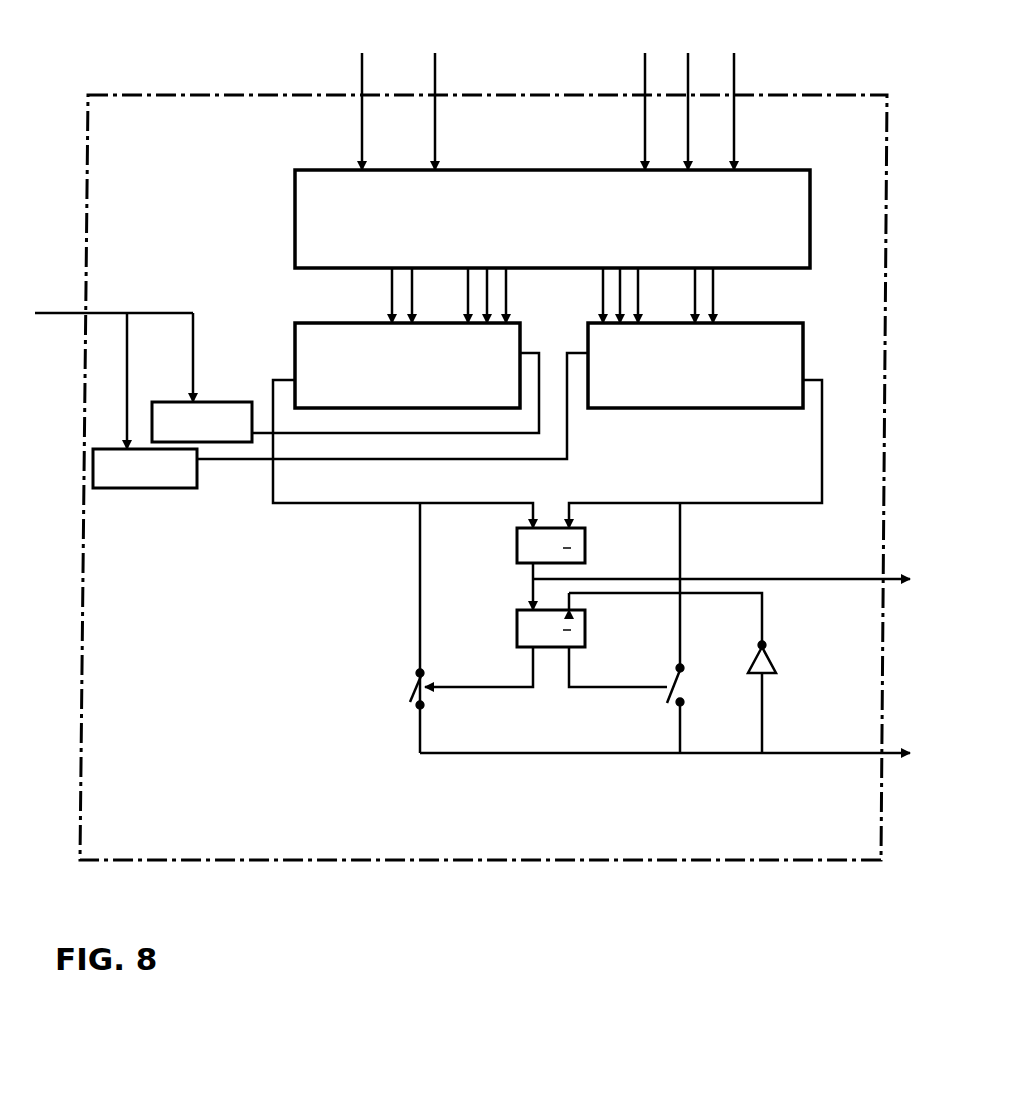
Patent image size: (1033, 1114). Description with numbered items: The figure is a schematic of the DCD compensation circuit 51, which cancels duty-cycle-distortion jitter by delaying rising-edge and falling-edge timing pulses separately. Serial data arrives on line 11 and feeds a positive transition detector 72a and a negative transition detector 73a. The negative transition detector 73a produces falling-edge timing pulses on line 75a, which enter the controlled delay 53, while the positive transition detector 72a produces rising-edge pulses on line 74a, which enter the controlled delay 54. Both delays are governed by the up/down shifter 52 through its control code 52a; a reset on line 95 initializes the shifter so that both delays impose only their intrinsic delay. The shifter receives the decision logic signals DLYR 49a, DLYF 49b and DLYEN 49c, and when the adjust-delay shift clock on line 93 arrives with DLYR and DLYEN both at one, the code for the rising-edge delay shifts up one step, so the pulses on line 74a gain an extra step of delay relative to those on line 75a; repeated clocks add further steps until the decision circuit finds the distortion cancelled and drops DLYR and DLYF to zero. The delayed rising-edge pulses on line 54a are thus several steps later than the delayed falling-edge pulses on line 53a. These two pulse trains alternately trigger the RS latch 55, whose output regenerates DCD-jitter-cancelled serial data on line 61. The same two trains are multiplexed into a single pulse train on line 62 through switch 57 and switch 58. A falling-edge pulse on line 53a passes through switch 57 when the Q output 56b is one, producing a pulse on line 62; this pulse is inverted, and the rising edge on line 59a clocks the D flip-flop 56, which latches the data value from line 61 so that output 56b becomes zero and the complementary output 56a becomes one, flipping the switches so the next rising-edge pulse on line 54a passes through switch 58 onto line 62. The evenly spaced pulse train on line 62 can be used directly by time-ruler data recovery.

The DCD compensation circuit 51 is at (418, 860).
The up/down shifter 52 is at (810, 192).
The shifter output control code 52a is at (713, 310).
The controlled delay 53 is at (520, 342).
The controlled delay 54 is at (803, 342).
The falling edge pulse line 53a is at (348, 503).
The rising edge pulse line 54a is at (628, 503).
The SHIFCK line 93 is at (362, 78).
The reset line 95 is at (435, 78).
The DLYR line 49a is at (645, 74).
The DLYF line 49b is at (688, 74).
The DLYEN line 49c is at (734, 74).
The serial data in line 11 is at (74, 316).
The negative transition detector 73a is at (178, 402).
The negative transition detector output line 75a is at (273, 433).
The positive transition detector 72a is at (160, 488).
The positive transition detector output line 74a is at (262, 460).
The RS latch 55 is at (517, 540).
The D flip-flop 56 is at (517, 624).
The Q_ output of DFF 56a is at (616, 687).
The Q output of DFF 56b is at (512, 687).
The switch 57 is at (412, 700).
The switch 58 is at (682, 690).
The inverter output line 59a is at (762, 602).
The regenerated serial data line 61 is at (778, 579).
The multiplexed pulse output line 62 is at (788, 755).